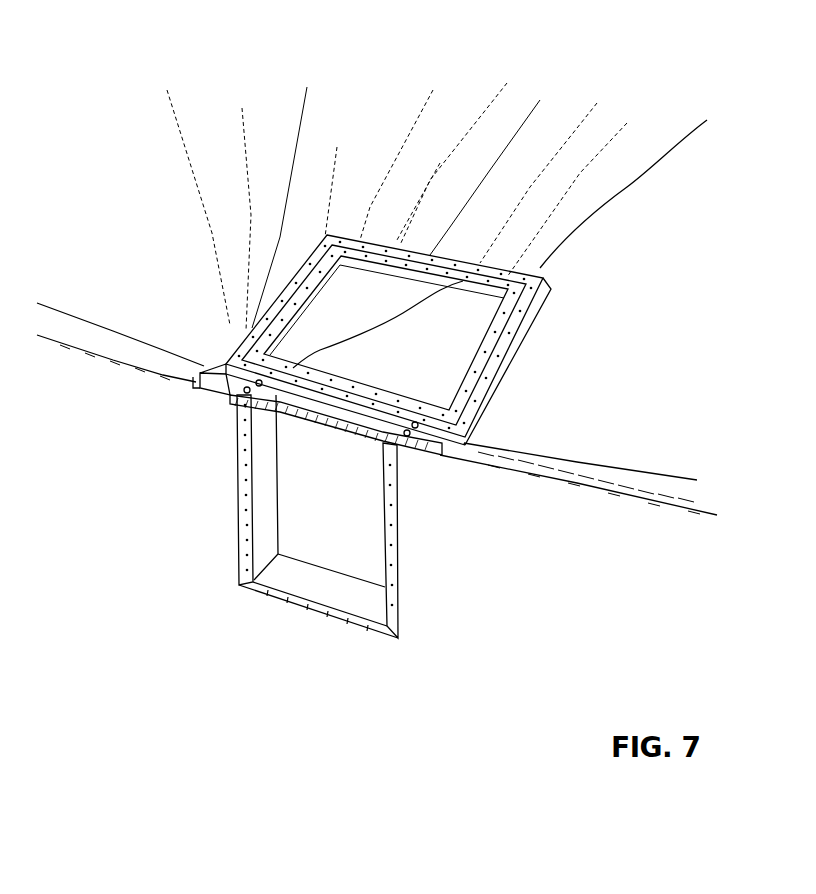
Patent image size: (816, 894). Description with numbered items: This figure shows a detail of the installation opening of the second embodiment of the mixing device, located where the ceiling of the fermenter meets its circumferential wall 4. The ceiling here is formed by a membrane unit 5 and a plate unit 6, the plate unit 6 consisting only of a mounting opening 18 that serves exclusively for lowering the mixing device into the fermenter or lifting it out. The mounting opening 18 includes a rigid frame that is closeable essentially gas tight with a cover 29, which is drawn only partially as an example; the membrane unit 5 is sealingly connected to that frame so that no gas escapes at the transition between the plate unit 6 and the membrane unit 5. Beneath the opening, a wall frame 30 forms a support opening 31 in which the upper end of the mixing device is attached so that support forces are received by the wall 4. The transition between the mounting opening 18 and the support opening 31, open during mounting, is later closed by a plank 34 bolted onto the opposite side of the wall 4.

The circumferential wall 4 is at (620, 562).
The membrane unit 5 is at (568, 144).
The plate unit 6 is at (297, 233).
The mounting opening 18 is at (433, 352).
The cover 29 is at (343, 303).
The wall frame 30 is at (390, 548).
The support opening 31 is at (313, 492).
The plank 34 is at (322, 405).